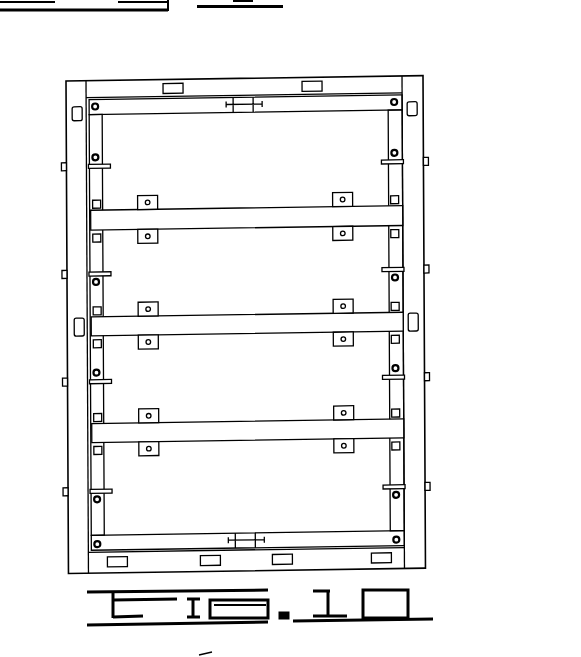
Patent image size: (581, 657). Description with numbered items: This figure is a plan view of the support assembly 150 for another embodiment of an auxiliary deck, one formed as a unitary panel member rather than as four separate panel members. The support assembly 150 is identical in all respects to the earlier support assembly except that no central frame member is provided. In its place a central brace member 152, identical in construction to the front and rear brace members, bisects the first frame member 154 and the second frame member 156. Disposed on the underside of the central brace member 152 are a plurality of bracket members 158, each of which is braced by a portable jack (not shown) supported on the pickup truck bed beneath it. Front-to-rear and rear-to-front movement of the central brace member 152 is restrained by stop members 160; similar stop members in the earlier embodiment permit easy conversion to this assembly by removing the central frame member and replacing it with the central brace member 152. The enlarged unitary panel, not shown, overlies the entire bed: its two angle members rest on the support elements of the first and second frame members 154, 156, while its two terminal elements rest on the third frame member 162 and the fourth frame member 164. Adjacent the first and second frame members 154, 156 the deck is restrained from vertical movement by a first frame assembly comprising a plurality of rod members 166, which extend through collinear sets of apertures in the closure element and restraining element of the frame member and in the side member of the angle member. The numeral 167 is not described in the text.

The support assembly 150 is at (380, 46).
The central brace member 152 is at (222, 316).
The first frame member 154 is at (428, 232).
The second frame member 156 is at (60, 234).
The bracket member 158 is at (147, 302).
The stop member 160 is at (102, 305).
The third frame member 162 is at (207, 71).
The fourth frame member 164 is at (334, 563).
The rod member 166 is at (62, 168).
The base member 167 is at (212, 652).